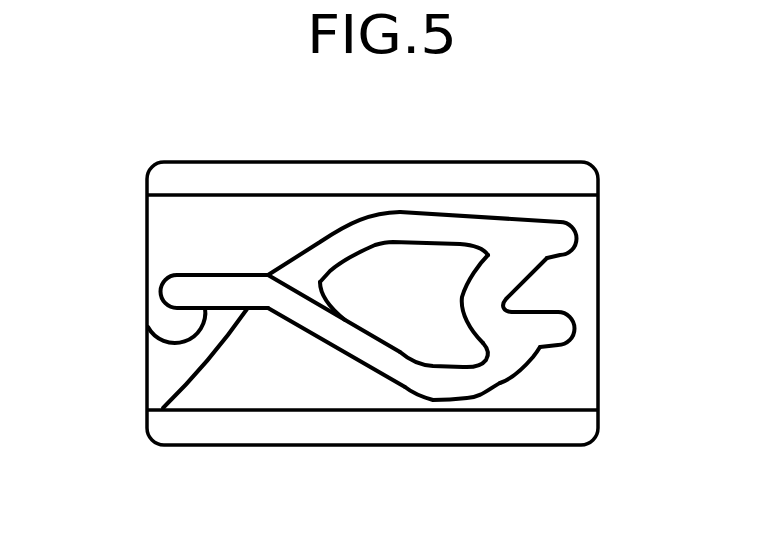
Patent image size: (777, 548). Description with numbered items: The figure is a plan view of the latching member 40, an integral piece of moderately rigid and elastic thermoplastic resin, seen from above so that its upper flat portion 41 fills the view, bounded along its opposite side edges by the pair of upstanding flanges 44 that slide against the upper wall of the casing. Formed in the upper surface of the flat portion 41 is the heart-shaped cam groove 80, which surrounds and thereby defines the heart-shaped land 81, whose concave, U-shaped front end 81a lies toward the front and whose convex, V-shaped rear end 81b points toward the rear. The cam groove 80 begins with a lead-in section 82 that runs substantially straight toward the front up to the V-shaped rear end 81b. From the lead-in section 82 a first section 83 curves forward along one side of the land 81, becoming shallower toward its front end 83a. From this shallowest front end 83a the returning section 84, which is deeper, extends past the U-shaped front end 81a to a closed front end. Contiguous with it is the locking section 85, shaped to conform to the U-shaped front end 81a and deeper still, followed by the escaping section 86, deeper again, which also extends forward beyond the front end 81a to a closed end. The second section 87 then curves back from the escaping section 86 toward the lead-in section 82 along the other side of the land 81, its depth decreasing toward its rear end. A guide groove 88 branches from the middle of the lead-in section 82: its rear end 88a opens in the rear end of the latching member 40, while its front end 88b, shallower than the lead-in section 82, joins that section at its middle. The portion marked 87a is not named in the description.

The latching member 40 is at (320, 313).
The upper flat portion 41 is at (162, 213).
The flanges 44 is at (138, 170).
The cam groove 80 is at (372, 313).
The heart-shaped land 81 is at (415, 379).
The U-shaped front end 81a is at (463, 320).
The V-shaped rear end 81b is at (348, 287).
The lead-in section 82 is at (195, 293).
The first section 83 is at (387, 363).
The front end of the first section 83a is at (520, 357).
The returning section 84 is at (560, 332).
The locking section 85 is at (510, 275).
The escaping section 86 is at (557, 240).
The second section 87 is at (408, 225).
The lower arm 87a is at (298, 295).
The guide groove 88 is at (163, 385).
The rear end of the guide groove 88a is at (150, 349).
The front end of the guide groove 88b is at (222, 309).